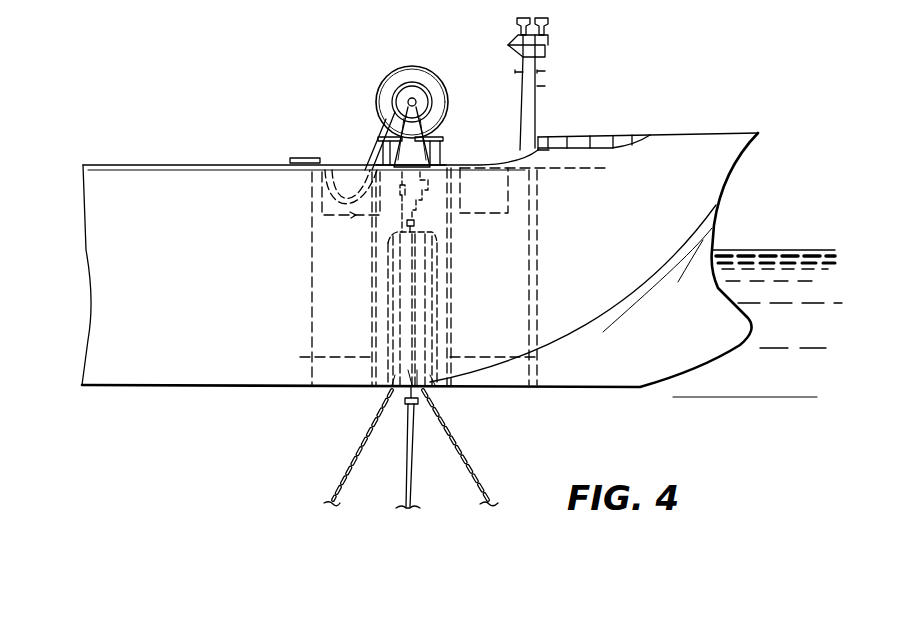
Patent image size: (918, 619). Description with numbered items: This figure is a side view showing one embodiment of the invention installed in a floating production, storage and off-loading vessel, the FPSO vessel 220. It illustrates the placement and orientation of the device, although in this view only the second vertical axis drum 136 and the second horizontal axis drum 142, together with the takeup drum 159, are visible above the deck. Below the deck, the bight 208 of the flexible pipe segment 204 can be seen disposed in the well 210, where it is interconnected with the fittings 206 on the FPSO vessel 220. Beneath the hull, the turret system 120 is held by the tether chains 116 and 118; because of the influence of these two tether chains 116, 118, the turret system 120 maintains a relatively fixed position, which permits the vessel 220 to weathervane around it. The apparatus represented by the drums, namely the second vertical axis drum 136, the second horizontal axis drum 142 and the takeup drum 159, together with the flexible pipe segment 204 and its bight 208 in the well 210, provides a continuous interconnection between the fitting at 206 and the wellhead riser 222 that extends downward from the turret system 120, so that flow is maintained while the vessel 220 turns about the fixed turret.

The FPSO vessel 220 is at (236, 127).
The second horizontal axis drum 142 is at (430, 74).
The takeup drum 159 is at (428, 100).
The second vertical axis drum 136 is at (436, 138).
The turret system 120 is at (410, 182).
The fittings 206 is at (320, 158).
The flexible pipe segment 204 is at (382, 158).
The well 210 is at (322, 196).
The bight 208 is at (358, 220).
The tether chain 116 is at (342, 477).
The tether chain 118 is at (483, 487).
The wellhead riser 222 is at (412, 487).